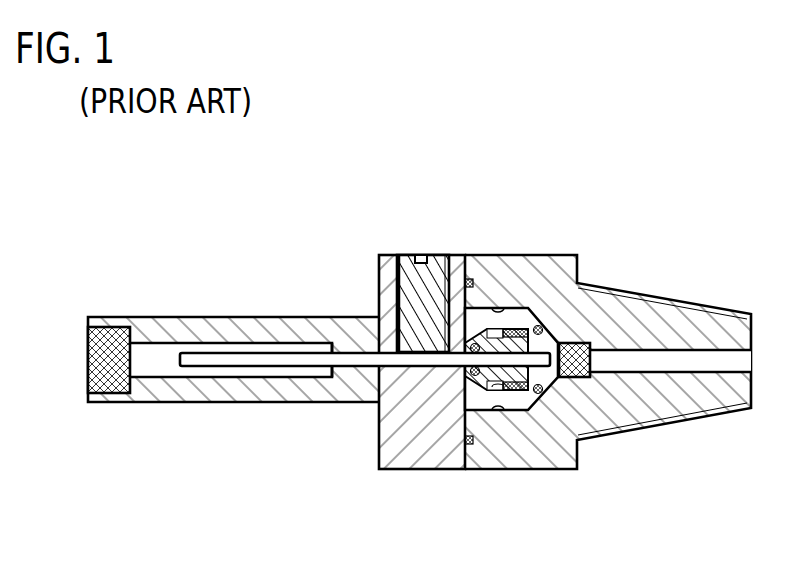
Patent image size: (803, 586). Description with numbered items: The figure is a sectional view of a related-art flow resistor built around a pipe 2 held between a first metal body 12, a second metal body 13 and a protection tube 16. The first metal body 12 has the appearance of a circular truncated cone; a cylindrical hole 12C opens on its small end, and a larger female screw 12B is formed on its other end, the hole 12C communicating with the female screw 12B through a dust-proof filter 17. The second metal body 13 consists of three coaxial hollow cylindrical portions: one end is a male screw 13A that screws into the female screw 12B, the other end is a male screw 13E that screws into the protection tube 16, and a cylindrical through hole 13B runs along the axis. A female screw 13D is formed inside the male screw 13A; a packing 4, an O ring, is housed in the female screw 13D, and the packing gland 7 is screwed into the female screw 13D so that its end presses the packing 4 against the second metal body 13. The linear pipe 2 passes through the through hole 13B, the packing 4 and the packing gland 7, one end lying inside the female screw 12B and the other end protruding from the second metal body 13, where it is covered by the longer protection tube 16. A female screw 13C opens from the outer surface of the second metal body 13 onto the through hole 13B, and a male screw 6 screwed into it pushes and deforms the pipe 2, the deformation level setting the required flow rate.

The pipe 2 is at (240, 353).
The packing 4 is at (471, 347).
The male screw 6 is at (441, 257).
The packing gland 7 is at (535, 393).
The first metal body 12 is at (700, 320).
The female screw 12B is at (509, 309).
The hole 12C is at (606, 354).
The second metal body 13 is at (437, 458).
The male screw 13A is at (496, 410).
The through hole 13B is at (442, 358).
The female screw 13C is at (405, 257).
The female screw 13D is at (509, 392).
The male screw 13E is at (348, 373).
The protection tube 16 is at (152, 317).
The dust-proof filter 17 is at (585, 380).